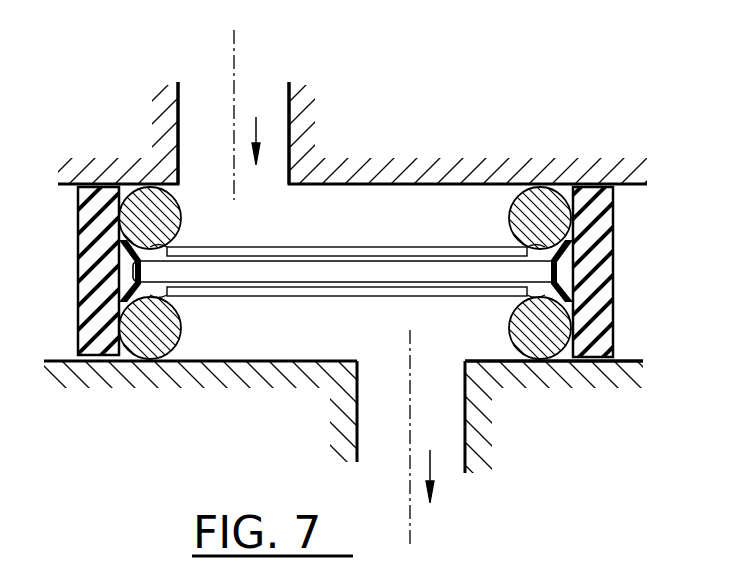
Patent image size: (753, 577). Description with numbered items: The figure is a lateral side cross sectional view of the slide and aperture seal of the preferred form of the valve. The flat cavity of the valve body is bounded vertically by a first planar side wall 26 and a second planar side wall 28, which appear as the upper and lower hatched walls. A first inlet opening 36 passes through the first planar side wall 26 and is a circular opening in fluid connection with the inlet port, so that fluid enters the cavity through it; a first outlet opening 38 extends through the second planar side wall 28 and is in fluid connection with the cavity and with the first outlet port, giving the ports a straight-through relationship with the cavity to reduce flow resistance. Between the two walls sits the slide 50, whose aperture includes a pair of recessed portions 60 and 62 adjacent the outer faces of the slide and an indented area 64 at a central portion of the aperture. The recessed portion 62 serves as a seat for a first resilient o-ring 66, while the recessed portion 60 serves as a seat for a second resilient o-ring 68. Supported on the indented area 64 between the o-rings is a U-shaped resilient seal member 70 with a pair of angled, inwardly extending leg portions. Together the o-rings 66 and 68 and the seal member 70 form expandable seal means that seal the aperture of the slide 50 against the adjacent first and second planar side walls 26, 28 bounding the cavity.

The first planar side wall 26 is at (498, 358).
The second planar side wall 28 is at (382, 185).
The first inlet opening 36 is at (385, 360).
The first outlet opening 38 is at (248, 185).
The slide 50 is at (613, 312).
The recessed portion 60 is at (603, 228).
The recessed portion 62 is at (573, 325).
The indented area 64 is at (577, 263).
The first resilient o-ring 66 is at (540, 360).
The second resilient o-ring 68 is at (513, 185).
The U-shaped resilient seal member 70 is at (203, 295).